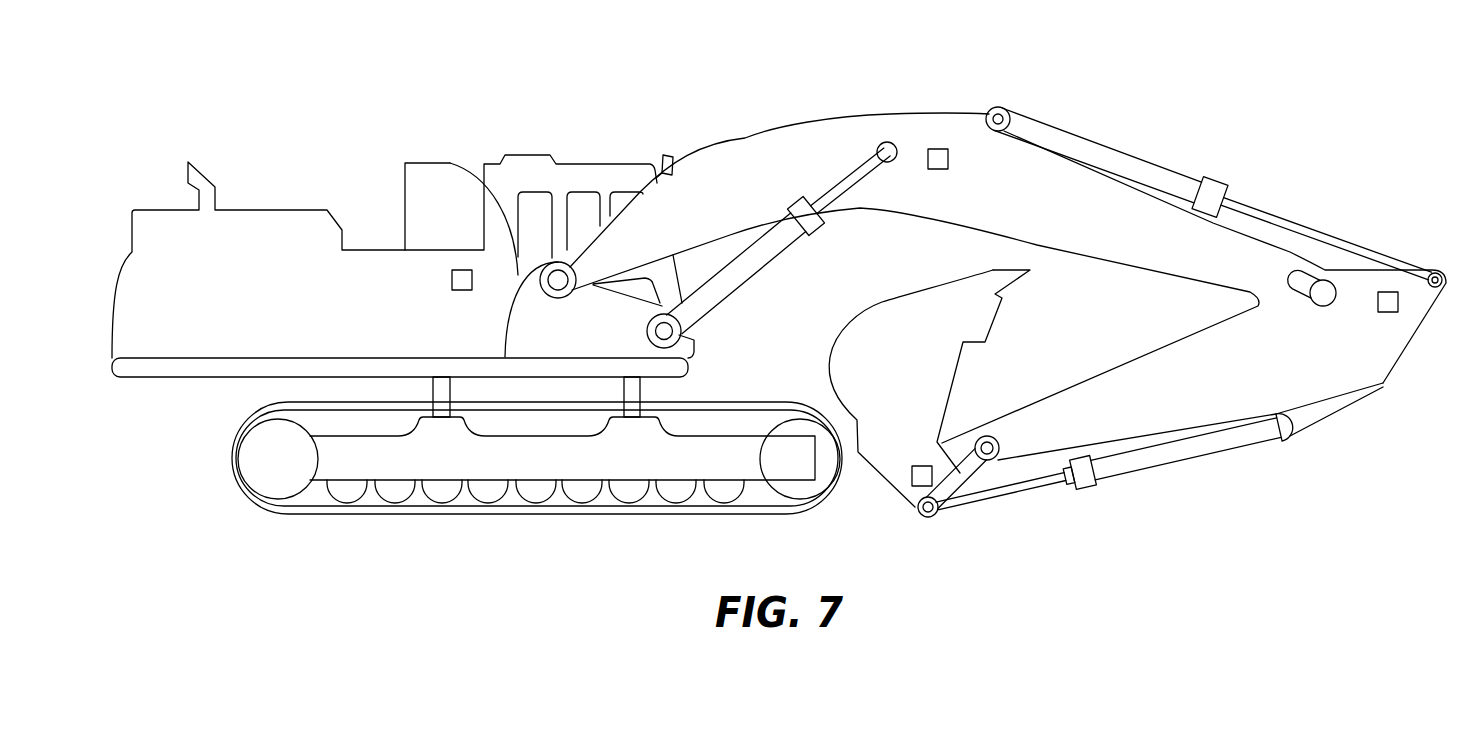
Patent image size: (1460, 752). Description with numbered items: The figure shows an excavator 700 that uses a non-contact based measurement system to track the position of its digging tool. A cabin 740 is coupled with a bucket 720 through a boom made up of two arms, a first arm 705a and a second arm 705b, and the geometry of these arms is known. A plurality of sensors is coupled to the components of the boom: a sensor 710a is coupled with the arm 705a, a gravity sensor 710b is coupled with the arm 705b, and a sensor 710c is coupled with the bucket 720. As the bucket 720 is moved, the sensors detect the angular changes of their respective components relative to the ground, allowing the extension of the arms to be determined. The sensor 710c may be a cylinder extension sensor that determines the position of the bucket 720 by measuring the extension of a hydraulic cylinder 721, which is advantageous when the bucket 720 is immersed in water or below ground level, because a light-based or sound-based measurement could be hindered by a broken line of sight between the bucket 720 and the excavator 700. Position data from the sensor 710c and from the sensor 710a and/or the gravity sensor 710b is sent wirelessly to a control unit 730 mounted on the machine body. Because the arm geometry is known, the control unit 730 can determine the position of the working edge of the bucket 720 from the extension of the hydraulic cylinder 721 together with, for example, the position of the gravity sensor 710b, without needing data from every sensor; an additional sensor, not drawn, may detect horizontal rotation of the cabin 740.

The excavator 700 is at (196, 100).
The arm 705a is at (723, 146).
The arm 705b is at (1383, 388).
The sensor 710a is at (930, 150).
The gravity sensor 710b is at (1388, 292).
The gravity sensor / cylinder extension sensor 710c is at (911, 478).
The bucket 720 is at (884, 478).
The hydraulic cylinder 721 is at (1007, 490).
The control unit 730 is at (453, 274).
The cabin 740 is at (197, 380).